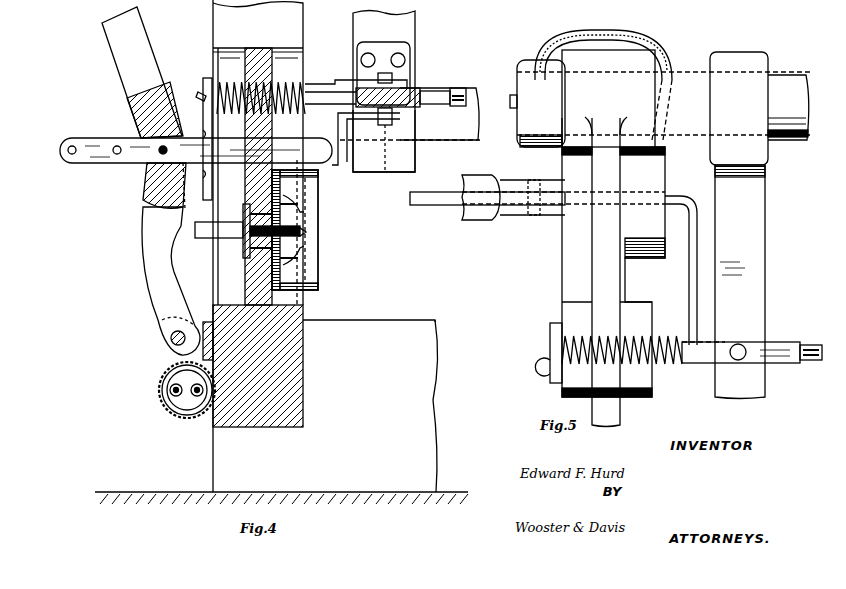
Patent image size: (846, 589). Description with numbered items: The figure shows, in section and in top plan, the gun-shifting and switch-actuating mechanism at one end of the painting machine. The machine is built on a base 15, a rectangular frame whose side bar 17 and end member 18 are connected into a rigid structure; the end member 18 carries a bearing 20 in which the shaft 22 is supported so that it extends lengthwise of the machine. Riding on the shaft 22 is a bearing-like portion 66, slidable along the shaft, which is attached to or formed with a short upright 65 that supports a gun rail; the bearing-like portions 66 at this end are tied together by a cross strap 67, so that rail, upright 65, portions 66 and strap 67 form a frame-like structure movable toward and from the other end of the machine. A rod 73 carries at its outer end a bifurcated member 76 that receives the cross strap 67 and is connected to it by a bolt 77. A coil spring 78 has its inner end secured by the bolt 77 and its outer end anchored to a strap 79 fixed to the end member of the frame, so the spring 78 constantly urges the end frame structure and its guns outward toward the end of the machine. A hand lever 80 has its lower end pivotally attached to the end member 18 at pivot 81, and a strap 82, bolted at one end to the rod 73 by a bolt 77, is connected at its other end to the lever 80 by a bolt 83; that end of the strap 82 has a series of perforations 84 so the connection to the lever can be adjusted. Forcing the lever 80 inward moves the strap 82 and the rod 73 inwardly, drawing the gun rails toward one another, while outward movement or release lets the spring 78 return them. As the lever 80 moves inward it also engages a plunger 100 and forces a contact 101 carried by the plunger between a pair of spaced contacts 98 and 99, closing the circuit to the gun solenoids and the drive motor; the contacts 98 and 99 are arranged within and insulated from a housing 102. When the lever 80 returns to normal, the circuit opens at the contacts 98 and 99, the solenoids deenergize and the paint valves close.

In FIG. 4, the base 15 is at (380, 330).
In FIG. 4, the side bar 17 is at (433, 350).
In FIG. 4, the end member 18 is at (246, 288).
In FIG. 5, the end member 18 is at (572, 274).
In FIG. 5, the bearing 20 is at (620, 65).
In FIG. 4, the shaft 22 is at (466, 110).
In FIG. 5, the shaft 22 is at (790, 85).
In FIG. 4, the upright 65 is at (400, 26).
In FIG. 4, the bearing-like portion 66 is at (400, 157).
In FIG. 5, the bearing-like portion 66 is at (735, 65).
In FIG. 4, the cross strap 67 is at (403, 78).
In FIG. 5, the cross strap 67 is at (757, 268).
In FIG. 4, the rod 73 is at (458, 86).
In FIG. 5, the rod 73 is at (811, 344).
In FIG. 4, the bifurcated member 76 is at (413, 108).
In FIG. 5, the bifurcated member 76 is at (782, 342).
In FIG. 4, the bolt 77 is at (385, 140).
In FIG. 5, the bolt 77 is at (738, 360).
In FIG. 4, the coil spring 78 is at (322, 82).
In FIG. 5, the coil spring 78 is at (549, 340).
In FIG. 4, the strap 79 is at (205, 78).
In FIG. 4, the hand lever 80 is at (125, 66).
In FIG. 5, the hand lever 80 is at (437, 206).
In FIG. 4, the pivot 81 is at (160, 342).
In FIG. 5, the pivot 81 is at (536, 218).
In FIG. 4, the strap 82 is at (340, 165).
In FIG. 5, the strap 82 is at (678, 196).
In FIG. 4, the bolt 83 is at (160, 155).
In FIG. 4, the perforations 84 is at (72, 155).
In FIG. 4, the contact 98 is at (305, 212).
In FIG. 4, the contact 99 is at (304, 246).
In FIG. 4, the plunger 100 is at (220, 238).
In FIG. 4, the contact 101 is at (306, 232).
In FIG. 4, the housing 102 is at (310, 292).
In FIG. 5, the housing 102 is at (640, 248).